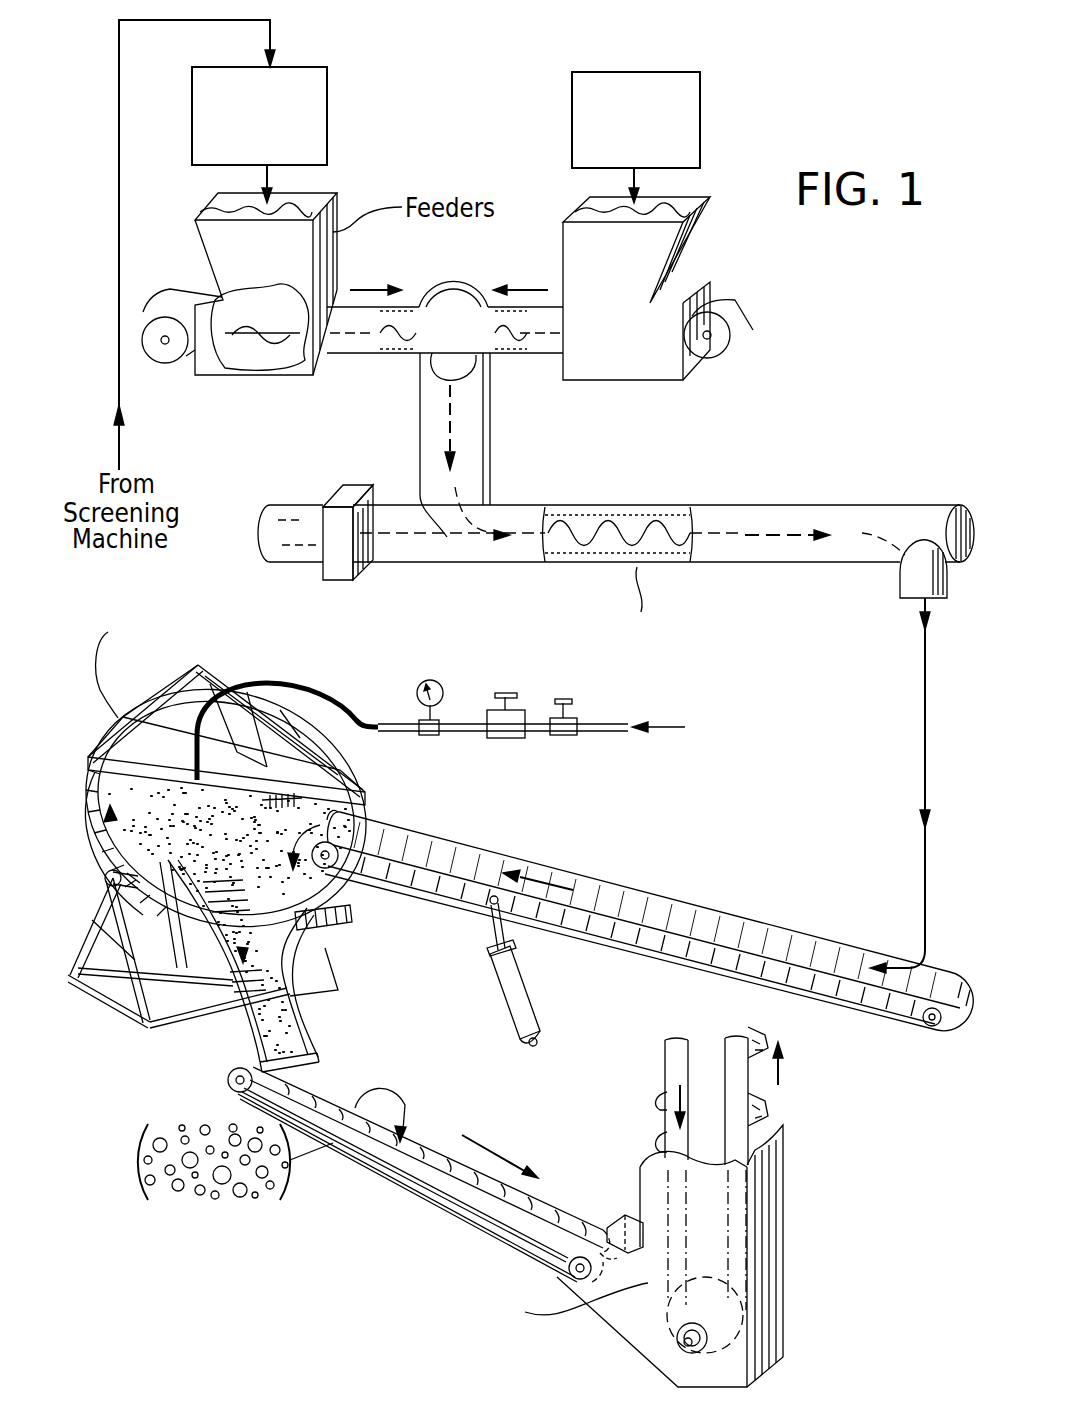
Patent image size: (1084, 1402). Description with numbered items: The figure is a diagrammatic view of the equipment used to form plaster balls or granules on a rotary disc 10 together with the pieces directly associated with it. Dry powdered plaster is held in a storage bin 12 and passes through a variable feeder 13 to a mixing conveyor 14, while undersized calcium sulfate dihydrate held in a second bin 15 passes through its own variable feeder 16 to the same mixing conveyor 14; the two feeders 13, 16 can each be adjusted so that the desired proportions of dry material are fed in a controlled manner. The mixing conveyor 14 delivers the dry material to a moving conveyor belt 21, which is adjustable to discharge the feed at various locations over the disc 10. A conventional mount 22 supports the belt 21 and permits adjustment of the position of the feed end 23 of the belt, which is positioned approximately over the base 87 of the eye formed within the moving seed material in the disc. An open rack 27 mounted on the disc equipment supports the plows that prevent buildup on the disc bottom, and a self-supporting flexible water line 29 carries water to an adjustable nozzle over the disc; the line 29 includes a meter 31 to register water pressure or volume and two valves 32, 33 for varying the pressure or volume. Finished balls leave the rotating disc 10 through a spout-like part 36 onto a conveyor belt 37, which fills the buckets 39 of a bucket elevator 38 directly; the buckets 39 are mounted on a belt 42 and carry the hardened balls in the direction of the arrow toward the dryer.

The disc 10 is at (344, 952).
The storage bin 12 is at (706, 125).
The variable feeder 13 is at (612, 348).
The mixing conveyor 14 is at (743, 505).
The bin 15 is at (327, 108).
The variable feeder 16 is at (207, 267).
The conveyor belt 21 is at (722, 895).
The mount 22 is at (515, 1000).
The feed end of the belt 23 is at (355, 818).
The open rack 27 is at (283, 721).
The flexible water line 29 is at (324, 688).
The meter 31 is at (431, 681).
The valve 32 is at (505, 690).
The valve 33 is at (564, 697).
The spout-like part 36 is at (250, 1022).
The conveyor belt 37 is at (432, 1128).
The bucket elevator 38 is at (763, 1230).
The buckets 39 is at (765, 1172).
The belt 42 is at (686, 1052).
The base of the eye 87 is at (328, 930).